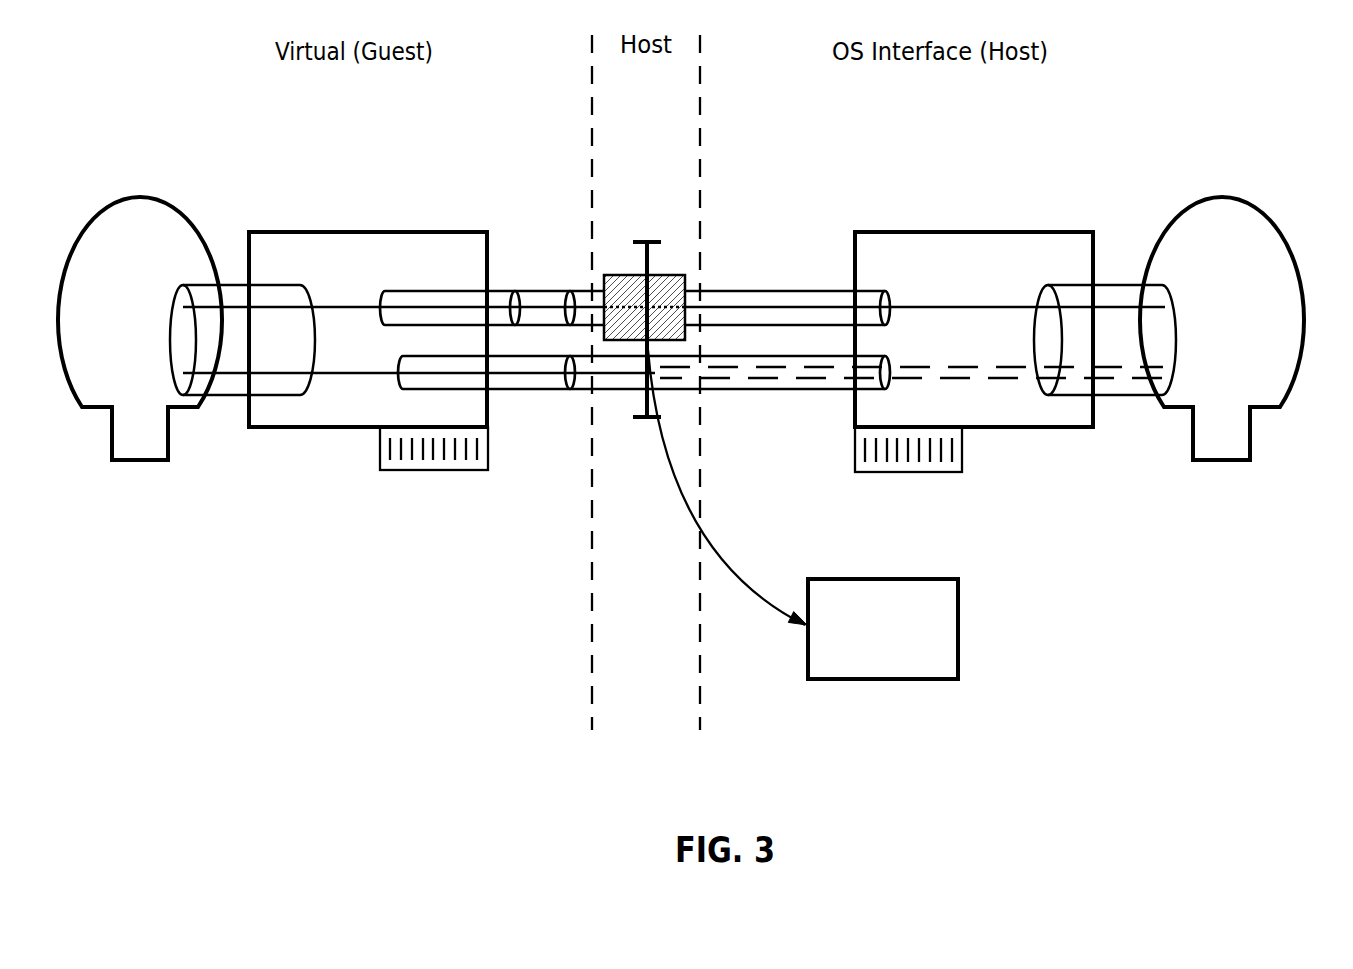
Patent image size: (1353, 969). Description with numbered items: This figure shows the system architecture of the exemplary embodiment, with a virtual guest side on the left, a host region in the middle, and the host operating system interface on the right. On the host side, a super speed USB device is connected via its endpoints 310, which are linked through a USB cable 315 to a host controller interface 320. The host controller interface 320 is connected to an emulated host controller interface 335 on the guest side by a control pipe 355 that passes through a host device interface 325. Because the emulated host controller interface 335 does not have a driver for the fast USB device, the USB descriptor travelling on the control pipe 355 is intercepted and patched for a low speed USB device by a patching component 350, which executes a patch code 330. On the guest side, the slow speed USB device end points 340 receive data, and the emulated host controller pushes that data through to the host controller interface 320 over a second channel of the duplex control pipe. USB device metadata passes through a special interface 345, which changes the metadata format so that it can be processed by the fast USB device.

The endpoints 310 is at (1223, 197).
The USB cable 315 is at (1112, 395).
The host controller interface 320 is at (1007, 232).
The host device interface 325 is at (647, 242).
The patch code 330 is at (958, 623).
The emulated host controller interface 335 is at (370, 232).
The guest system slow speed USB device end points 340 is at (165, 202).
The special interface 345 is at (565, 390).
The patching component 350 is at (615, 275).
The control pipe 355 is at (710, 290).